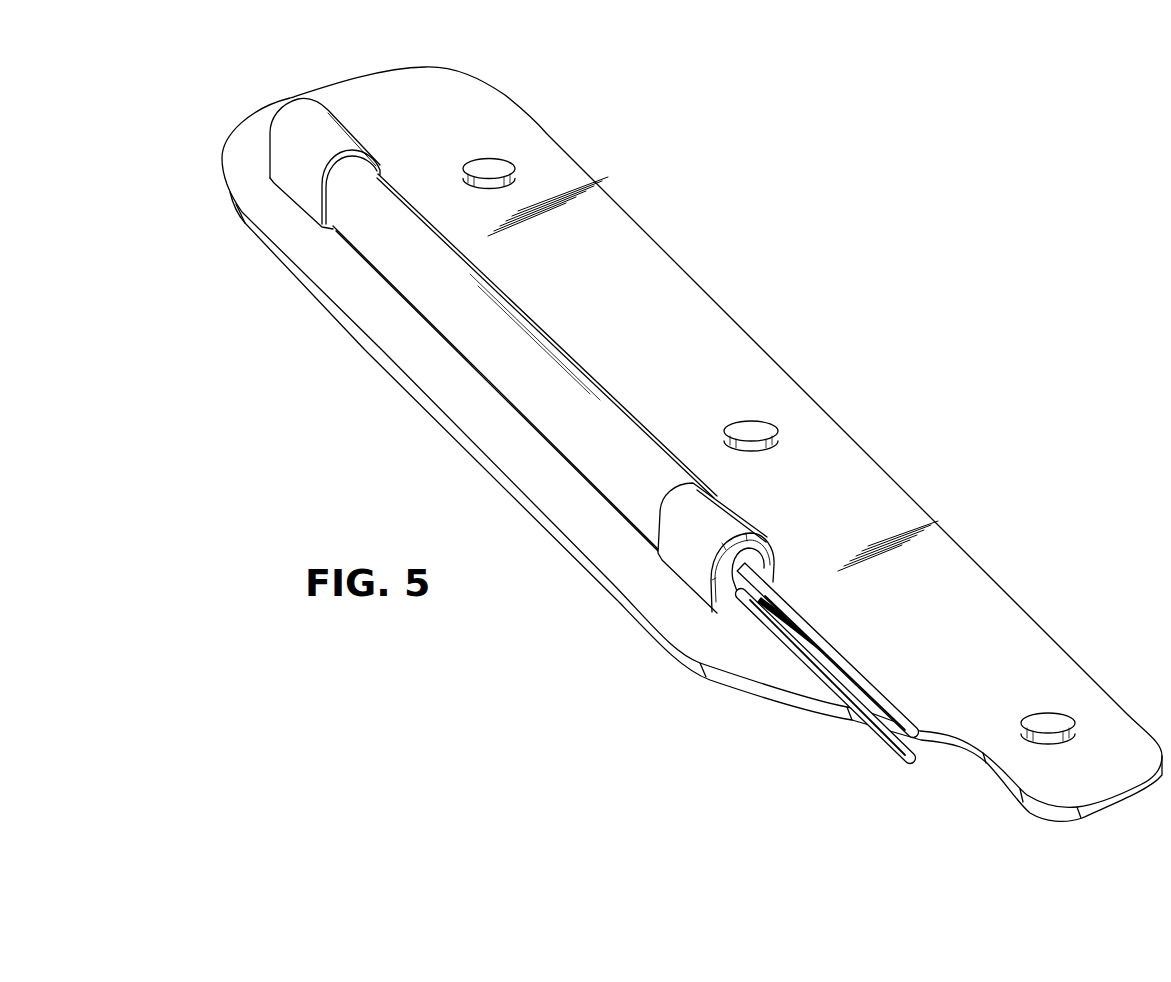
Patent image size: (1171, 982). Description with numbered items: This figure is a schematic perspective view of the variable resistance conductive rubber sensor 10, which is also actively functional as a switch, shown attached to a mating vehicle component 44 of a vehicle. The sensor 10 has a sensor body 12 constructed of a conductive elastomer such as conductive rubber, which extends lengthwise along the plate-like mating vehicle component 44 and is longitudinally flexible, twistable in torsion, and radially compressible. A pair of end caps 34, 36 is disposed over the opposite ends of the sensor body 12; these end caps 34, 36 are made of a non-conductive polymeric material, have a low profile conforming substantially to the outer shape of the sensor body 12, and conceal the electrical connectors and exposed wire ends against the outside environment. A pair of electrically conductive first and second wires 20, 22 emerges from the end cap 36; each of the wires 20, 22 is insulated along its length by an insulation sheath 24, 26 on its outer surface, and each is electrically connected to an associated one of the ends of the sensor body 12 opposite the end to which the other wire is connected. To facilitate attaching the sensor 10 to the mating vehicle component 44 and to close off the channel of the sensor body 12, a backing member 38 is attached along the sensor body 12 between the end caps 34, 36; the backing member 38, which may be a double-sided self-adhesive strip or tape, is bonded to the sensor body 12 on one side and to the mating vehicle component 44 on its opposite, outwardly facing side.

The sensor 10 is at (741, 219).
The sensor body 12 is at (573, 395).
The first wire 20 is at (886, 746).
The second wire 22 is at (887, 698).
The first insulation sheath 24 is at (792, 641).
The second insulation sheath 26 is at (837, 654).
The end cap 34 is at (293, 144).
The end cap 36 is at (717, 514).
The backing member 38 is at (550, 447).
The mating vehicle component 44 is at (986, 567).